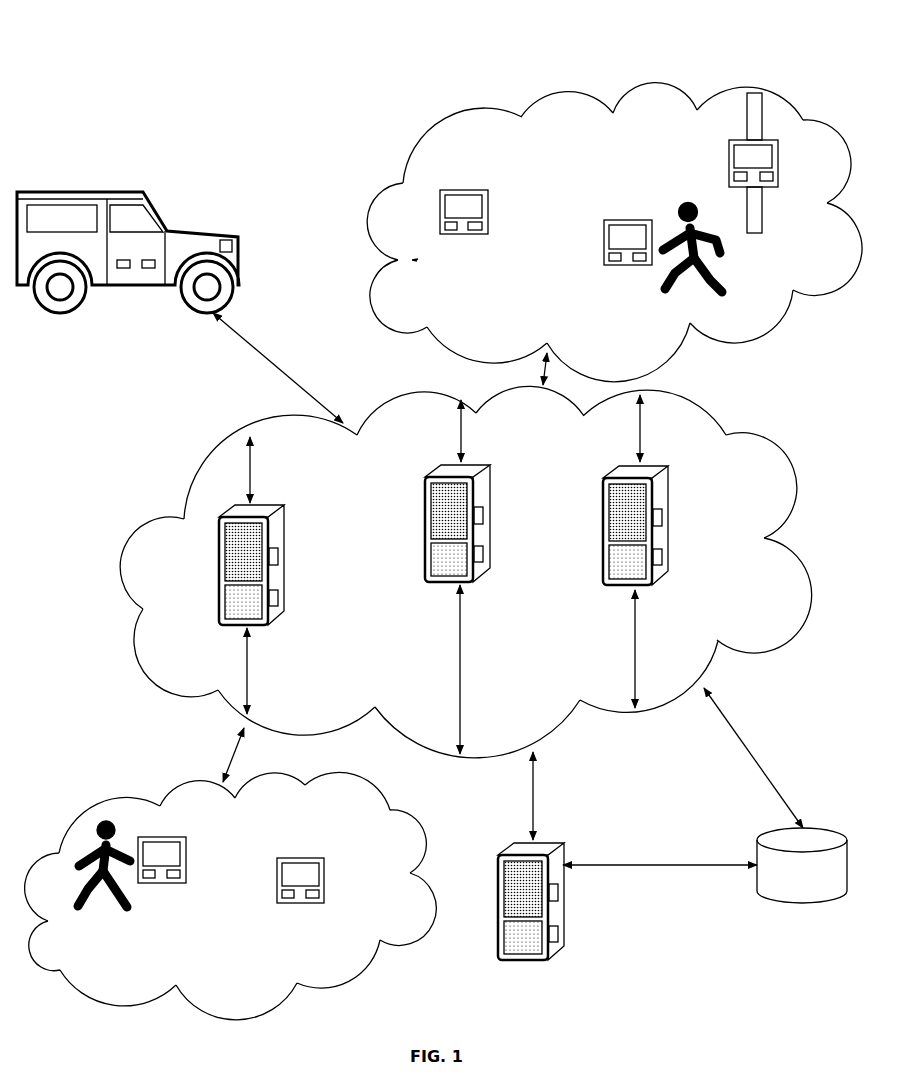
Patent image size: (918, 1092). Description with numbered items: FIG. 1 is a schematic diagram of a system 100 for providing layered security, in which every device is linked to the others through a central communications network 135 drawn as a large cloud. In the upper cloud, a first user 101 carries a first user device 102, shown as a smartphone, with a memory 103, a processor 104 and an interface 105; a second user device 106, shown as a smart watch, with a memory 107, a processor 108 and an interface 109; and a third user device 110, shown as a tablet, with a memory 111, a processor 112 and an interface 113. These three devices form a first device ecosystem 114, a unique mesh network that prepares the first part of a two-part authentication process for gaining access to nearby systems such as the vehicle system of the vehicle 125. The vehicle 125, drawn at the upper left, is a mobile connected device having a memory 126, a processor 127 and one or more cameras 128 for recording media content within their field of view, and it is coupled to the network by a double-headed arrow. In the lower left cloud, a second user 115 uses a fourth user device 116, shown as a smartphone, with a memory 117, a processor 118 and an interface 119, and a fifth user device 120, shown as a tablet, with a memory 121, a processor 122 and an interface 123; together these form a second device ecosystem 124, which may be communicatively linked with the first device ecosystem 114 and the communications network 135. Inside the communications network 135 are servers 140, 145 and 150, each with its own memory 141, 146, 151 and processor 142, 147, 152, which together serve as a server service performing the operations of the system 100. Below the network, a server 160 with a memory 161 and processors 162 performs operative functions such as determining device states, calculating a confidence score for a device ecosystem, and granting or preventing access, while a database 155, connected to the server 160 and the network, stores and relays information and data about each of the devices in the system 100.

The system 100 is at (152, 106).
The first user 101 is at (713, 297).
The first user device 102 is at (601, 246).
The memory 103 is at (613, 261).
The processor 104 is at (638, 261).
The interface 105 is at (627, 225).
The second user device 106 is at (752, 153).
The memory 107 is at (739, 183).
The processor 108 is at (768, 183).
The interface 109 is at (771, 147).
The third user device 110 is at (489, 218).
The memory 111 is at (450, 230).
The processor 112 is at (475, 230).
The interface 113 is at (463, 195).
The first device ecosystem 114 is at (405, 182).
The second user 115 is at (75, 912).
The fourth user device 116 is at (188, 850).
The memory 117 is at (148, 878).
The processor 118 is at (172, 878).
The interface 119 is at (160, 842).
The fifth user device 120 is at (325, 890).
The memory 121 is at (287, 898).
The processor 122 is at (310, 898).
The interface 123 is at (300, 863).
The second device ecosystem 124 is at (97, 798).
The vehicle 125 is at (168, 235).
The memory 126 is at (121, 283).
The processor 127 is at (149, 283).
The camera 128 is at (232, 255).
The communications network 135 is at (130, 546).
The server 140 is at (264, 565).
The memory 141 is at (279, 558).
The processor 142 is at (279, 598).
The server 145 is at (454, 523).
The memory 146 is at (484, 515).
The processor 147 is at (484, 553).
The server 150 is at (637, 525).
The memory 151 is at (663, 518).
The processor 152 is at (663, 558).
The database 155 is at (802, 865).
The server 160 is at (546, 901).
The memory 161 is at (559, 935).
The processor 162 is at (559, 893).